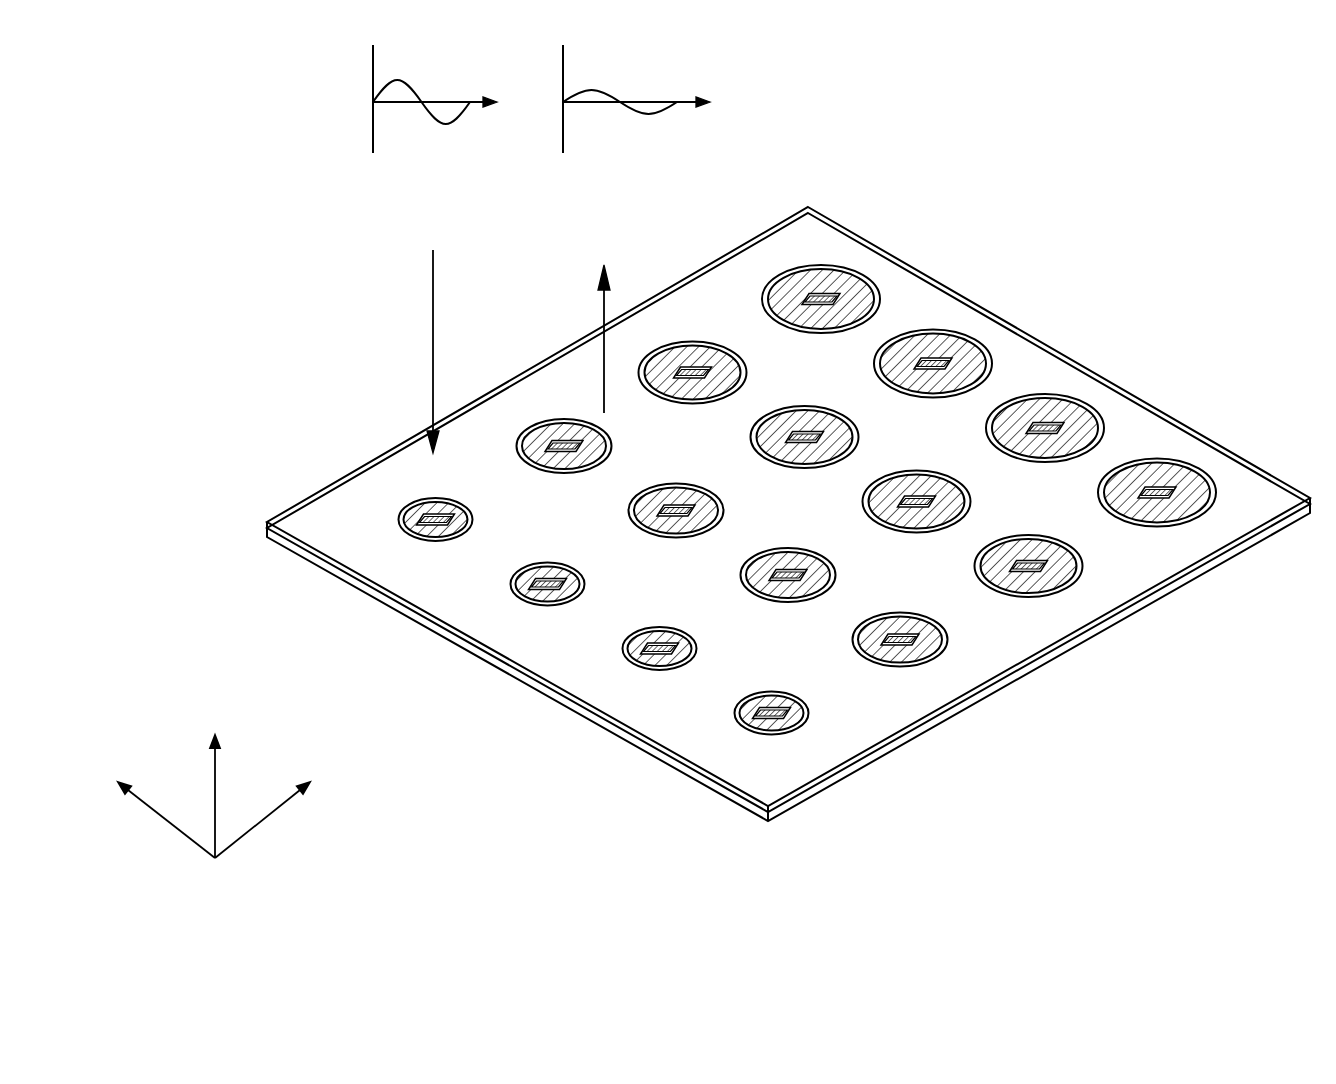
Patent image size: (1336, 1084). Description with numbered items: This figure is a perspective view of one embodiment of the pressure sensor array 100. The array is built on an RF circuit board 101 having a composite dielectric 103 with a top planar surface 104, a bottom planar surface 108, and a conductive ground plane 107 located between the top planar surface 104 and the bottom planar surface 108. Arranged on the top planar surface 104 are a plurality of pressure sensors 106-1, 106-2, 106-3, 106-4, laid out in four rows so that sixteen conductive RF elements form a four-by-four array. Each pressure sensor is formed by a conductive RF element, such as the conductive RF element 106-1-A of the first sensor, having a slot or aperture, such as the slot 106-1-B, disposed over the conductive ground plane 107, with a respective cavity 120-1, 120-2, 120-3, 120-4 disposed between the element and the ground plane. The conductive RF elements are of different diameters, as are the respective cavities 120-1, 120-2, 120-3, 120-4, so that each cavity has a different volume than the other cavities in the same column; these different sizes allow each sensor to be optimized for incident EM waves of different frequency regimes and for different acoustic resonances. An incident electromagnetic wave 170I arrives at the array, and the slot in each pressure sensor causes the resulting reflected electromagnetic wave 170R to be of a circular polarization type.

The pressure sensor array 100 is at (300, 90).
The RF circuit board 101 is at (588, 763).
The composite dielectric 103 is at (490, 623).
The top planar surface 104 is at (1040, 352).
The pressure sensor 106-1 is at (456, 479).
The conductive RF element 106-1-A is at (430, 532).
The slot 106-1-B is at (421, 508).
The pressure sensor 106-2 is at (624, 452).
The pressure sensor 106-3 is at (758, 384).
The pressure sensor 106-4 is at (876, 268).
The cavity 120-1 is at (451, 538).
The cavity 120-2 is at (561, 474).
The cavity 120-3 is at (685, 404).
The cavity 120-4 is at (838, 332).
The conductive ground plane 107 is at (1023, 670).
The bottom planar surface 108 is at (1010, 703).
The incident electromagnetic wave 170I is at (408, 249).
The reflected electromagnetic wave 170R is at (613, 229).